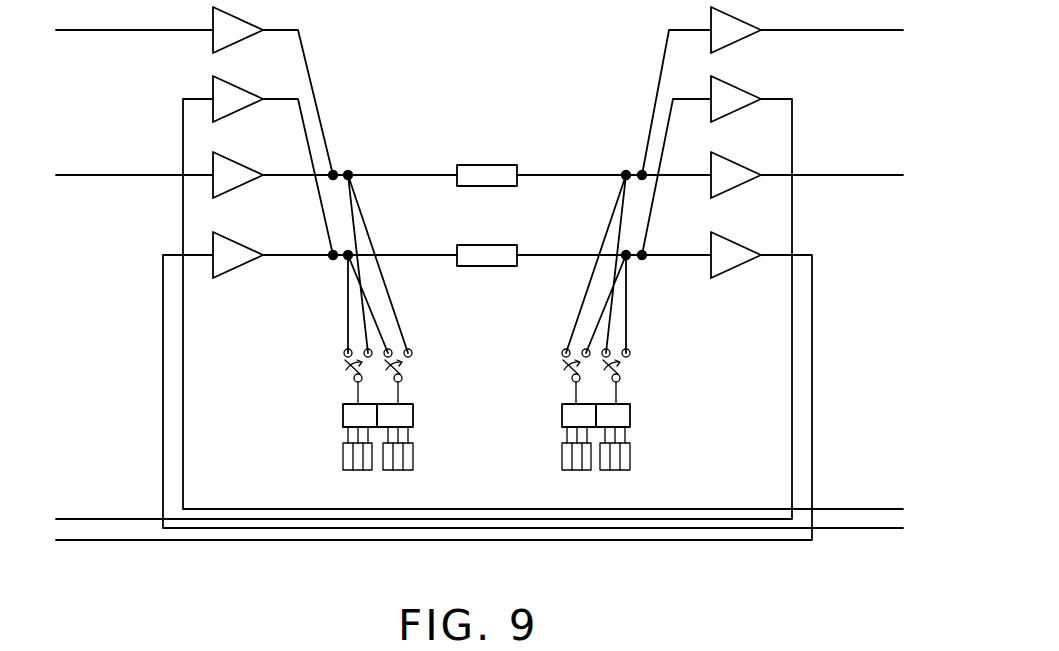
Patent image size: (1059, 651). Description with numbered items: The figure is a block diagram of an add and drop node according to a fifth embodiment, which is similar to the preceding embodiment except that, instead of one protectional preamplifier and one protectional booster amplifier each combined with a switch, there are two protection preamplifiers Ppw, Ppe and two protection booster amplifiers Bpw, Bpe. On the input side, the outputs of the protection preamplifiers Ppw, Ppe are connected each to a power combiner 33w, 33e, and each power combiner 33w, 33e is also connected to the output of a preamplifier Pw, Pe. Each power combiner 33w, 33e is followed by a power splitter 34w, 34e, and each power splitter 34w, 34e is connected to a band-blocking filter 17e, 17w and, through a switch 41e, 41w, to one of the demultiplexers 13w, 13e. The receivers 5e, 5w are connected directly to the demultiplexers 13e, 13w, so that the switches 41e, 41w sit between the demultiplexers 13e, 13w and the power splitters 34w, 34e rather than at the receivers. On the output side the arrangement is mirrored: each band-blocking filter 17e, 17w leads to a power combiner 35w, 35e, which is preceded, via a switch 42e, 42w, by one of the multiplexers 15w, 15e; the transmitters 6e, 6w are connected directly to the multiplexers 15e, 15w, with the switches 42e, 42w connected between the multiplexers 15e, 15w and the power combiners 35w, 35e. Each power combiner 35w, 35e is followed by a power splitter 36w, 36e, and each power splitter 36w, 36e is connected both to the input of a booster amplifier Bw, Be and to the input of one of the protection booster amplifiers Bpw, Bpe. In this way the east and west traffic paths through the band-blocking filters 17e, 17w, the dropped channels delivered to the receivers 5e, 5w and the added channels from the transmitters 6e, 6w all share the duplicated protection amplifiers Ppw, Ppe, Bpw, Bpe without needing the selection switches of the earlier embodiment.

The protection preamplifier Ppw is at (230, 12).
The protection preamplifier Ppe is at (232, 80).
The preamplifier Pw is at (232, 156).
The preamplifier Pe is at (232, 237).
The booster amplifier Bpe is at (742, 12).
The booster amplifier Bpw is at (717, 74).
The booster amplifier Be is at (717, 153).
The booster amplifier Bw is at (717, 234).
The power combiner 33w is at (338, 172).
The power combiner 33e is at (332, 260).
The power splitter 34w is at (352, 173).
The power splitter 34e is at (350, 251).
The band-blocking filter 17e is at (512, 165).
The band-blocking filter 17w is at (490, 266).
The power combiner 35e is at (612, 174).
The power combiner 35w is at (630, 258).
The power splitter 36e is at (637, 172).
The power splitter 36w is at (646, 257).
The switch 41e is at (344, 354).
The switch 41w is at (412, 353).
The switch 42e is at (562, 353).
The switch 42w is at (630, 353).
The demultiplexer 13e is at (343, 415).
The demultiplexer 13w is at (413, 417).
The multiplexer 15e is at (562, 413).
The multiplexer 15w is at (630, 417).
The receiver 5e is at (343, 450).
The receiver 5w is at (413, 462).
The transmitter 6e is at (562, 465).
The transmitter 6w is at (632, 455).